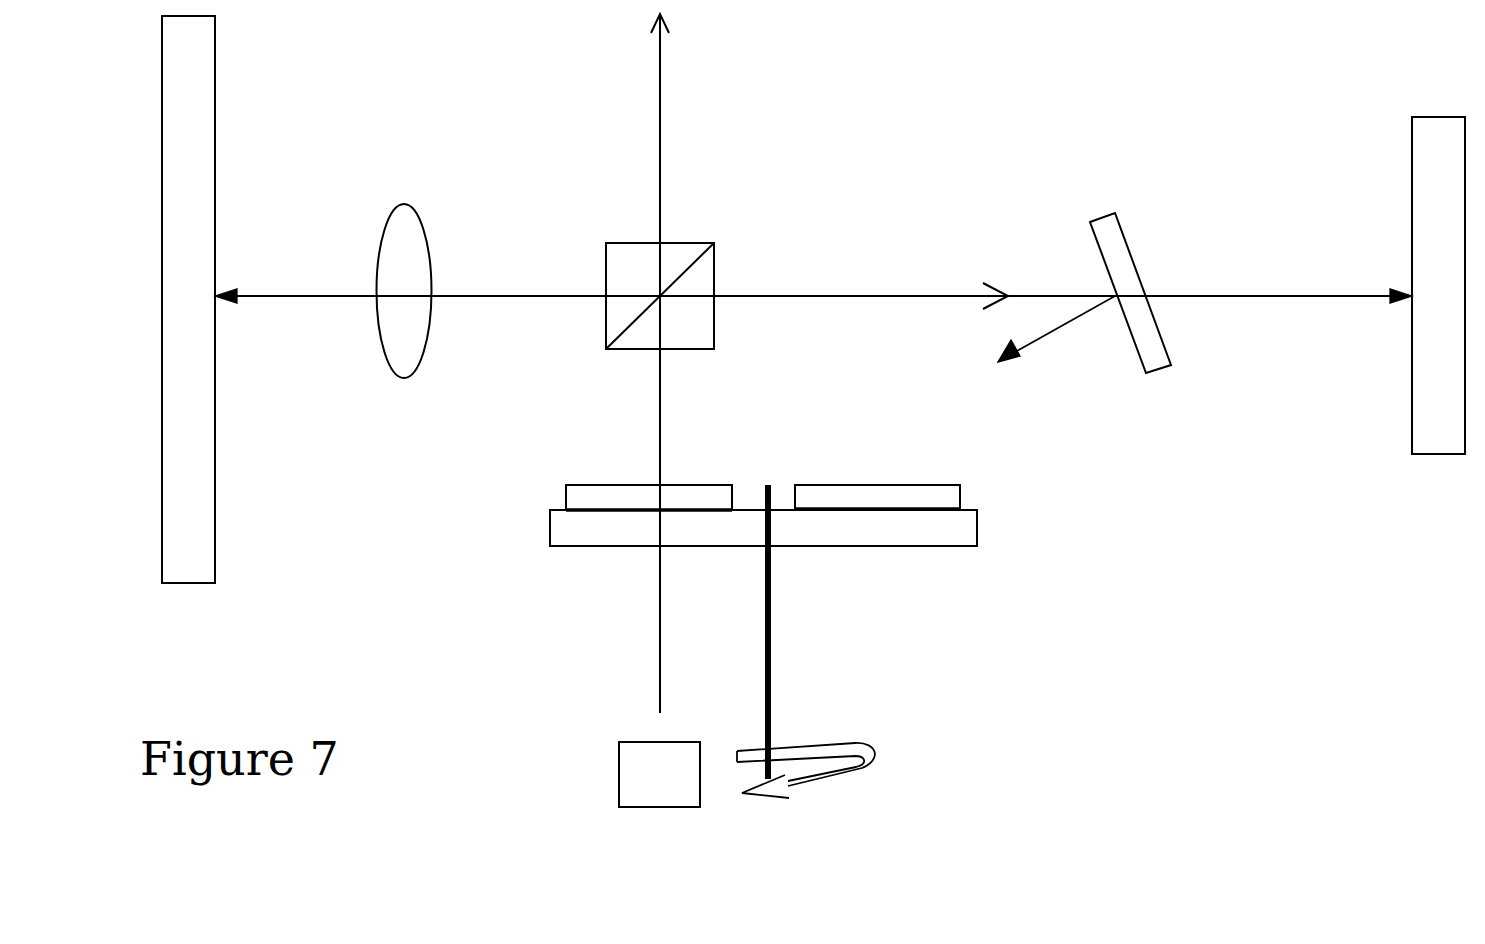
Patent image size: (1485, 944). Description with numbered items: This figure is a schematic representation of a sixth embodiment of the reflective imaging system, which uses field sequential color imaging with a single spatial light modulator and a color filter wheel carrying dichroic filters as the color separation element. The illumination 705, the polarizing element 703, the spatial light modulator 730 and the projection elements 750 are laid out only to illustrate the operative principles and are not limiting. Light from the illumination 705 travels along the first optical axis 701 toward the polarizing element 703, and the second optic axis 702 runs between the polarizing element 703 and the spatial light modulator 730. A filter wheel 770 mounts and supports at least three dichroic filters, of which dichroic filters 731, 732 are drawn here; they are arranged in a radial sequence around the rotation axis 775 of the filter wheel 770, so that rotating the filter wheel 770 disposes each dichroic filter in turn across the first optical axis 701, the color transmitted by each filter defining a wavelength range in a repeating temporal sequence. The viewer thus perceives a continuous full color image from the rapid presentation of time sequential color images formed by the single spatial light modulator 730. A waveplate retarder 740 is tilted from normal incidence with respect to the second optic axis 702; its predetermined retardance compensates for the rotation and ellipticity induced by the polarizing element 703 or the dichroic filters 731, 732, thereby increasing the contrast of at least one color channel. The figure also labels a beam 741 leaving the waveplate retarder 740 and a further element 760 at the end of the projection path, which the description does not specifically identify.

The first optical axis 701 is at (647, 580).
The second optic axis 702 is at (821, 309).
The polarizing element 703 is at (622, 351).
The illumination 705 is at (619, 783).
The spatial light modulator 730 is at (1400, 467).
The dichroic filter 731 is at (553, 475).
The dichroic filter 732 is at (930, 483).
The waveplate retarder 740 is at (1124, 211).
The reflected beam 741 is at (1052, 341).
The projection elements 750 is at (405, 379).
The left mirror 760 is at (202, 583).
The filter wheel 770 is at (997, 553).
The rotation axis 775 is at (786, 600).